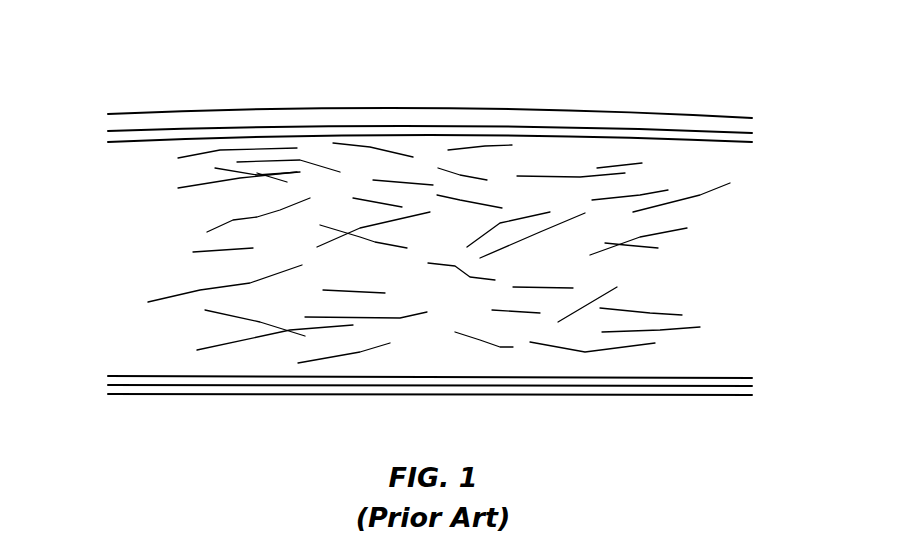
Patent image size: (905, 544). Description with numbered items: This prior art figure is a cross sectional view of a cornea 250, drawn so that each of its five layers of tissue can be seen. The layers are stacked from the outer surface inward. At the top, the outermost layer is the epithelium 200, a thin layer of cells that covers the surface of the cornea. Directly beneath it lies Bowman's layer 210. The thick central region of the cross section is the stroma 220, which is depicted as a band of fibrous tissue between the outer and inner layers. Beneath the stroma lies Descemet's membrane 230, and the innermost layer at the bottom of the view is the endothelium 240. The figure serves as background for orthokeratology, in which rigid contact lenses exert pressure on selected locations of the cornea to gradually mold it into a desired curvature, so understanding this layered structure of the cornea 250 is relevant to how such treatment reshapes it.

The cornea 250 is at (151, 40).
The epithelium 200 is at (655, 120).
The Bowman's layer 210 is at (717, 135).
The stroma 220 is at (668, 232).
The Descemet's membrane 230 is at (632, 380).
The endothelium 240 is at (715, 390).